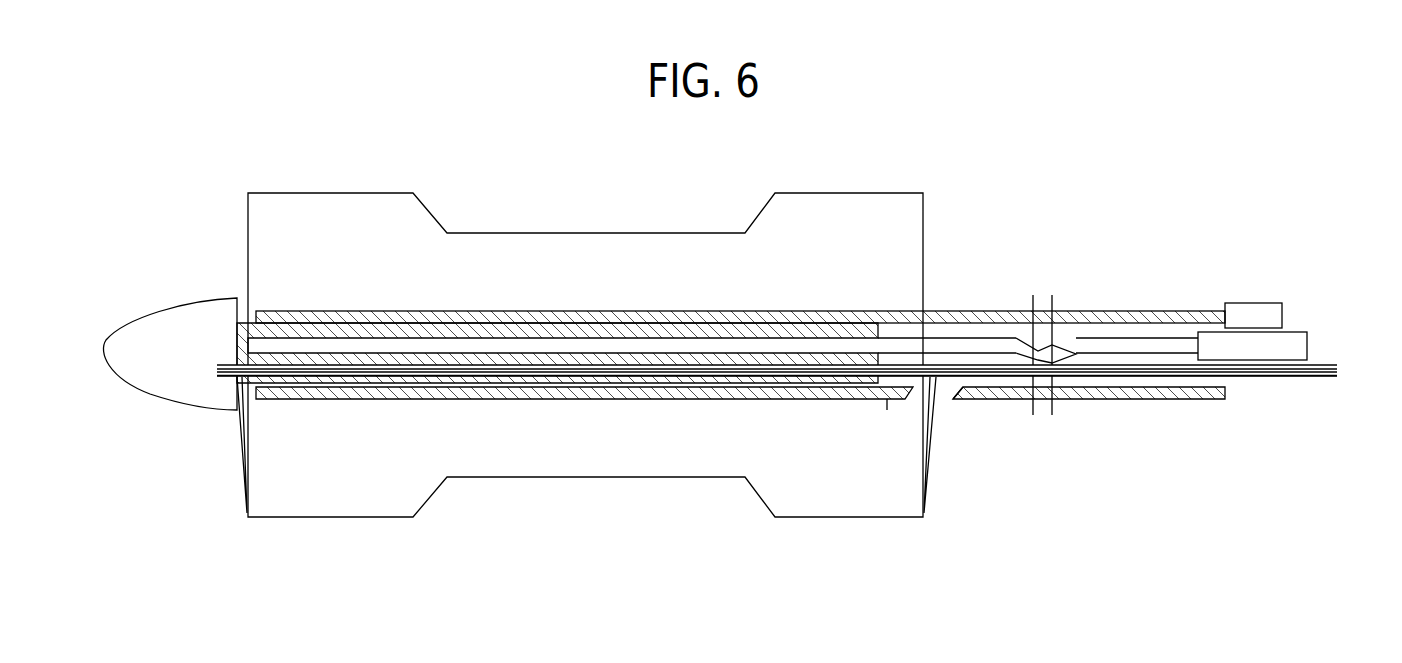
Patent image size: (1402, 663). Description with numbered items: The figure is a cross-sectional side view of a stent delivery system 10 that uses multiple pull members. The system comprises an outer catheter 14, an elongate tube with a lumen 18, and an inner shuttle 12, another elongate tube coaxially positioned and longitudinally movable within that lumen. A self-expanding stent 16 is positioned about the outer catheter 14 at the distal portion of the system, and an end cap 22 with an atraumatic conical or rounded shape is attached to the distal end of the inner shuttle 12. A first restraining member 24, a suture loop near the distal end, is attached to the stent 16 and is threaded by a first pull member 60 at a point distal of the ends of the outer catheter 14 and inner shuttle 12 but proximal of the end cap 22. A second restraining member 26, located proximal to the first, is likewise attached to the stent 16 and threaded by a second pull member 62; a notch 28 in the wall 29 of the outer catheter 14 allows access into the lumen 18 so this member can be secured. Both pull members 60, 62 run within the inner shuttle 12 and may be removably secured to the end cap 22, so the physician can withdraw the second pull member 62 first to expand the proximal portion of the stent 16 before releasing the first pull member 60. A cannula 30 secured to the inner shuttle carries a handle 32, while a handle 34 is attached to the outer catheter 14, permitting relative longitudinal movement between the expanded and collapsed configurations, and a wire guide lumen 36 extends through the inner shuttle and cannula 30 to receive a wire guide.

The stent delivery system 10 is at (890, 134).
The inner shuttle 12 is at (660, 387).
The outer catheter 14 is at (597, 311).
The stent 16 is at (332, 193).
The lumen 18 is at (966, 311).
The end cap 22 is at (155, 312).
The first restraining member 24 is at (240, 467).
The second restraining member 26 is at (935, 436).
The notch 28 is at (944, 396).
The wall 29 is at (887, 399).
The cannula 30 is at (1118, 338).
The handle 32 is at (1293, 332).
The handle 34 is at (1253, 303).
The wire guide lumen 36 is at (292, 348).
The first pull member 60 is at (236, 365).
The second pull member 62 is at (234, 378).